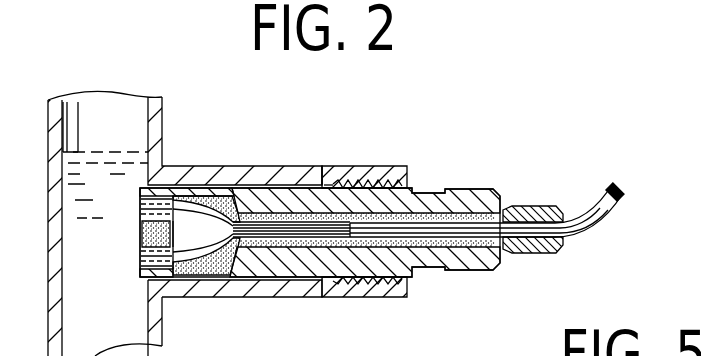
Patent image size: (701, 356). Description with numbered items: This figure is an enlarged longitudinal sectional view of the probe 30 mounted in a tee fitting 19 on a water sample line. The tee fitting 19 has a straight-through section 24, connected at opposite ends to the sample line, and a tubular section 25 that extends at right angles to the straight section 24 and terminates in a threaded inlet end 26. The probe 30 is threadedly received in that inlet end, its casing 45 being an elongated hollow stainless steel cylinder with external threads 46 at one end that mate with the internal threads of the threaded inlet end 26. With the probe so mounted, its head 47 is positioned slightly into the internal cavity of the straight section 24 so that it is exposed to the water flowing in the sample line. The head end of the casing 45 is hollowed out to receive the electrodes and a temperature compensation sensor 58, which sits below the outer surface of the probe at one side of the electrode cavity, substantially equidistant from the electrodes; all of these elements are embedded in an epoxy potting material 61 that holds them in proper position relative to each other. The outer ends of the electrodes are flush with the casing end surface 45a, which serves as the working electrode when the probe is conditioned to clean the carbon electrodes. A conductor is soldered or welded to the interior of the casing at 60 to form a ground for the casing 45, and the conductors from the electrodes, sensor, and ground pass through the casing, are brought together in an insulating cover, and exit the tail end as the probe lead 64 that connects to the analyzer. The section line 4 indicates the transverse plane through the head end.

The section line 4- 4 is at (143, 287).
The tee fitting 19 is at (47, 213).
The straight-through section 24 is at (50, 322).
The tubular section 25 is at (255, 172).
The threaded inlet end 26 is at (364, 194).
The probe 30 is at (312, 183).
The casing 45 is at (276, 191).
The casing end surface 45a is at (139, 191).
The external threads 46 is at (370, 284).
The head 47 is at (138, 228).
The temperature compensation sensor 58 is at (176, 195).
The casing ground connection 60 is at (222, 200).
The epoxy potting material 61 is at (212, 258).
The probe lead 64 is at (583, 232).